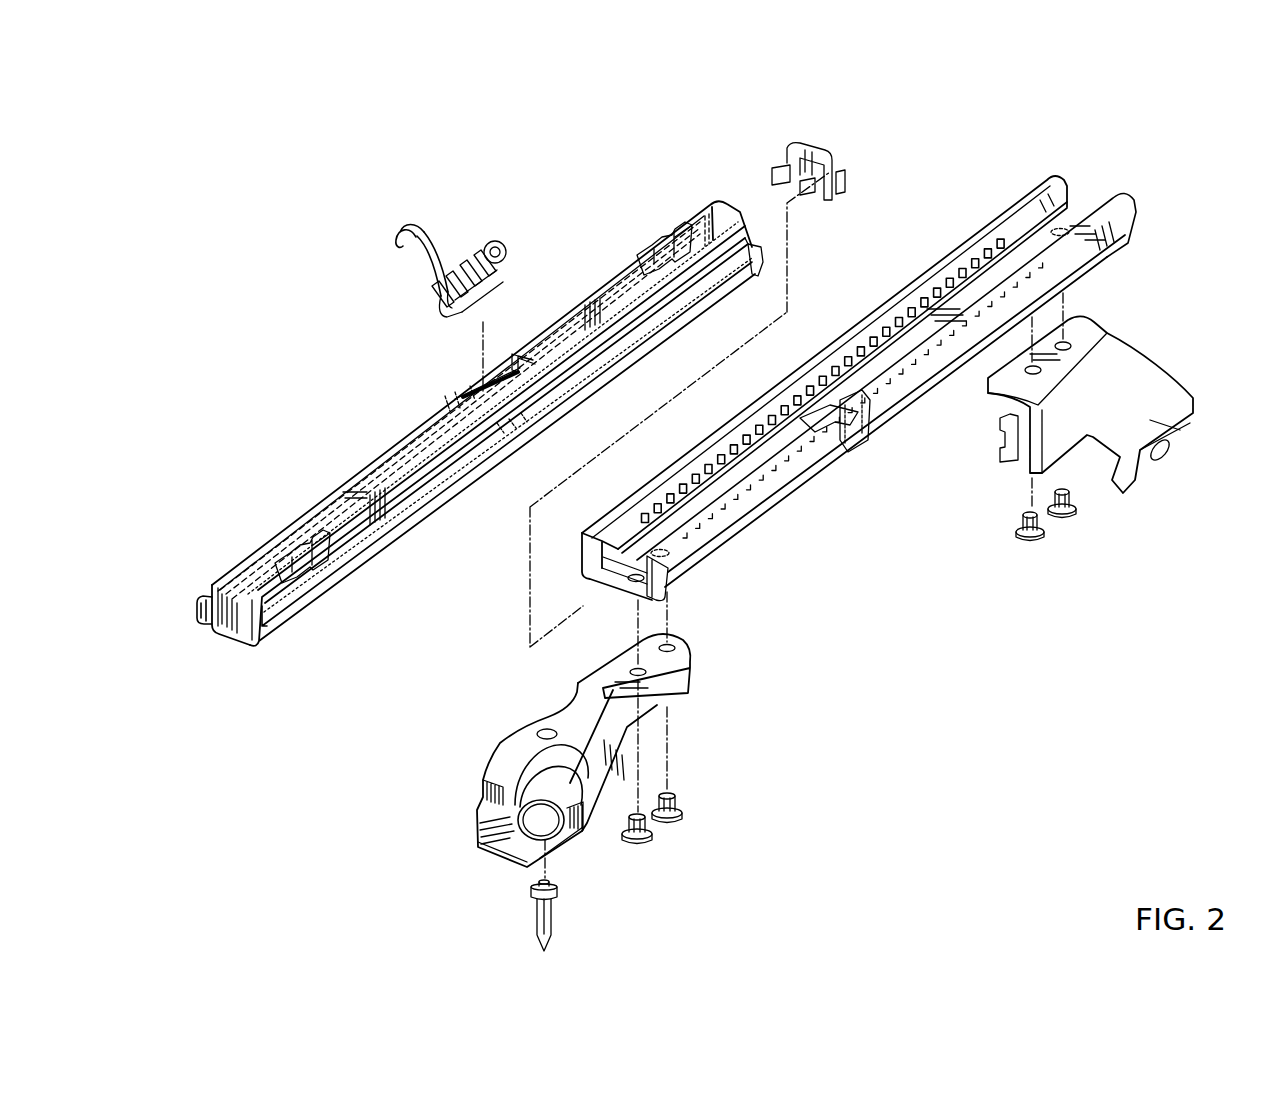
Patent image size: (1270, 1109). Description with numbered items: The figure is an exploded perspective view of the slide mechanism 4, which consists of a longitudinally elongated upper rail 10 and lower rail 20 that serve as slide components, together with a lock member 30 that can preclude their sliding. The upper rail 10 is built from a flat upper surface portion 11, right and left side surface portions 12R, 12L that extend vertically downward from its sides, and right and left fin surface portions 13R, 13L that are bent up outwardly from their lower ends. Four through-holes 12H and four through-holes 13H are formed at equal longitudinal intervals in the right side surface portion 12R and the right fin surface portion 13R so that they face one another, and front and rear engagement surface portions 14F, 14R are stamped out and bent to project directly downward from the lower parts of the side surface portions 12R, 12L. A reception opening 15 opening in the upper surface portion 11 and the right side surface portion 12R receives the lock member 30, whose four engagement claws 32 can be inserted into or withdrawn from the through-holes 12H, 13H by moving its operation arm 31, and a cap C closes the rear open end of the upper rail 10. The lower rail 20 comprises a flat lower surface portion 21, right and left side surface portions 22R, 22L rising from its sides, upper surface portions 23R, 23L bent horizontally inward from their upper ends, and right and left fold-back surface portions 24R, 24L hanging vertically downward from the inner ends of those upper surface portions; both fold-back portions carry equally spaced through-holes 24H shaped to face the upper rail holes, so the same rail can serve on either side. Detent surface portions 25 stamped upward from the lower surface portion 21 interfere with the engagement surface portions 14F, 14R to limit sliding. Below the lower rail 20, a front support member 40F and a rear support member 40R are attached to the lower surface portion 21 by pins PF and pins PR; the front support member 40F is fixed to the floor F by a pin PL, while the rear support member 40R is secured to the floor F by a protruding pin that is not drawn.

The slide mechanism 4 is at (929, 180).
The upper rail 10 is at (385, 463).
The upper surface portion 11 is at (430, 448).
The right side surface portion 12R is at (232, 586).
The left side surface portion 12L is at (268, 598).
The right fin surface portion 13R is at (197, 610).
The left fin surface portion 13L is at (305, 600).
The through-holes 13H is at (483, 392).
The through-holes 12H is at (523, 414).
The front engagement surface portions 14F is at (307, 540).
The rear engagement surface portions 14R is at (700, 280).
The reception opening 15 is at (513, 355).
The lower rail 20 is at (817, 478).
The lower surface portion 21 is at (733, 450).
The right side surface portion 22R is at (582, 552).
The left side surface portion 22L is at (727, 533).
The right upper surface portion 23R is at (676, 487).
The left upper surface portion 23L is at (760, 532).
The right fold-back surface portion 24R is at (627, 535).
The left fold-back surface portion 24L is at (660, 582).
The through-holes 24H is at (850, 363).
The detent surface portions 25 is at (833, 443).
The lock member 30 is at (456, 265).
The operation arm 31 is at (420, 250).
The engagement claws 32 is at (490, 303).
The rear support member 40R is at (1140, 372).
The front support member 40F is at (677, 690).
The pins PR is at (1062, 520).
The pins PF is at (676, 820).
The pin PL is at (548, 913).
The cap C is at (807, 170).
The floor F is at (834, 761).